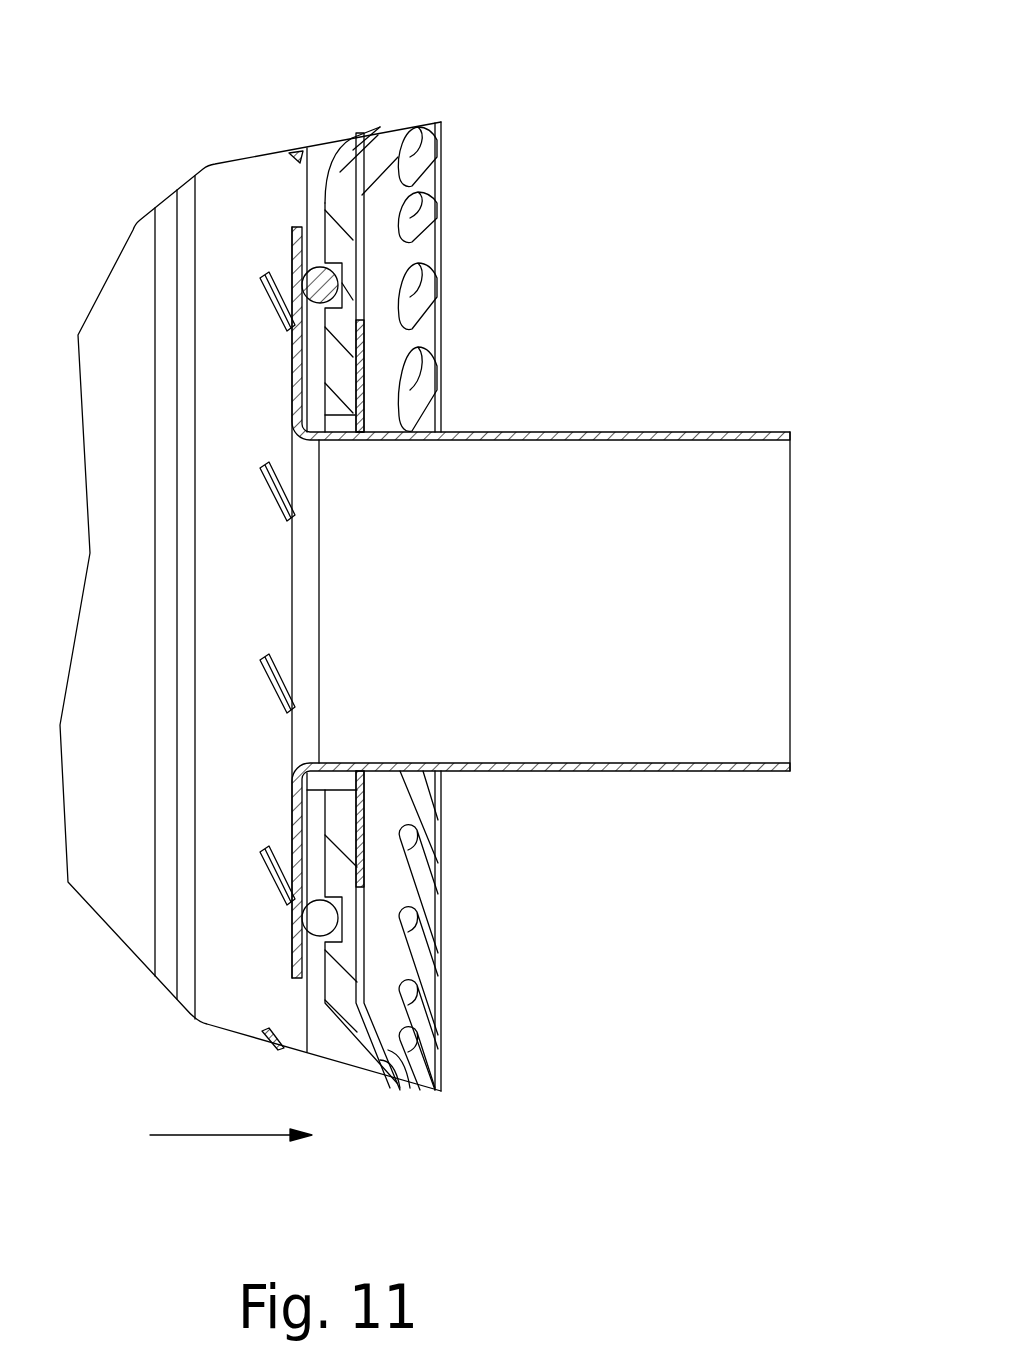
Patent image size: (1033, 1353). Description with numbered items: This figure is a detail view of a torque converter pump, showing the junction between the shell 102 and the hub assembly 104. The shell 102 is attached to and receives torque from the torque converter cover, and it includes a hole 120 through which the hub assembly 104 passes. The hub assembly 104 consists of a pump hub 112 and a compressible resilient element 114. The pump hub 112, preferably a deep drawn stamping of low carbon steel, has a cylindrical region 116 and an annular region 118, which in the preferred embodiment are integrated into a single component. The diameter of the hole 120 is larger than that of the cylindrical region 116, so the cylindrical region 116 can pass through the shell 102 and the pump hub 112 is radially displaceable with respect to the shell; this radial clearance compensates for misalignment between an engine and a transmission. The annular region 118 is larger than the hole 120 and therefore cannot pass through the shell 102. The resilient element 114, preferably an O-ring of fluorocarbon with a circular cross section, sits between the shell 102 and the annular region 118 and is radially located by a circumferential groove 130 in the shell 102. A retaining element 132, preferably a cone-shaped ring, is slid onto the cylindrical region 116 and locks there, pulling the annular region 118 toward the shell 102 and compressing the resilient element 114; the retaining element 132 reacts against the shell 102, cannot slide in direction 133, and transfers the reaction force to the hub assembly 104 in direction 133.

The shell 102 is at (347, 205).
The hub assembly 104 is at (525, 384).
The pump hub 112 is at (640, 432).
The compressible resilient element 114 is at (337, 922).
The cylindrical region 116 is at (797, 788).
The annular region 118 is at (275, 985).
The hole 120 is at (365, 400).
The circumferential groove 130 is at (356, 277).
The retaining element 132 is at (312, 792).
The direction 133 is at (207, 1135).